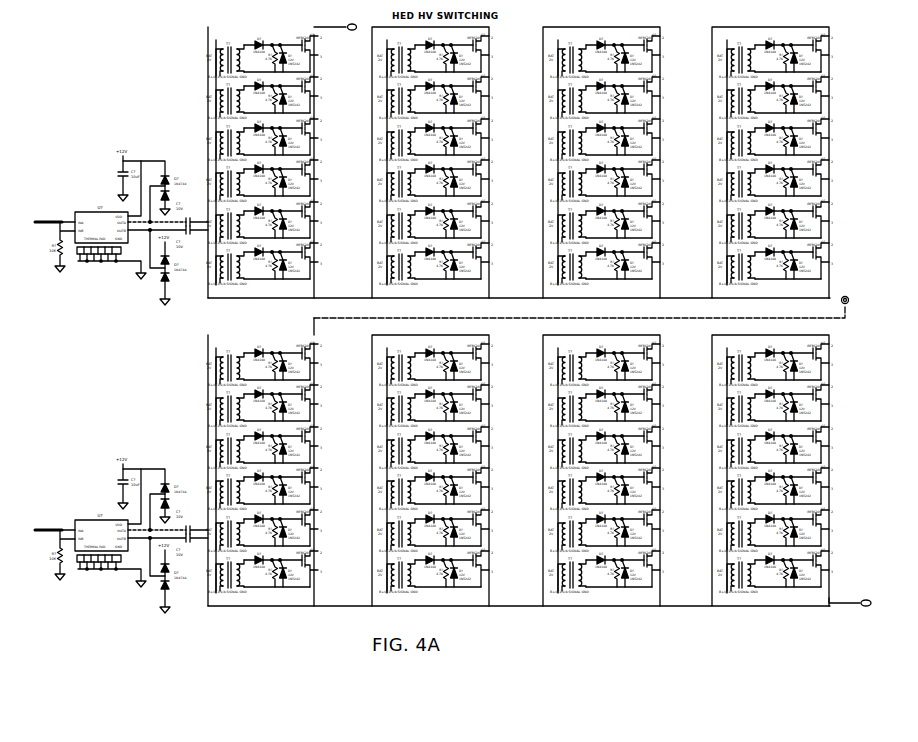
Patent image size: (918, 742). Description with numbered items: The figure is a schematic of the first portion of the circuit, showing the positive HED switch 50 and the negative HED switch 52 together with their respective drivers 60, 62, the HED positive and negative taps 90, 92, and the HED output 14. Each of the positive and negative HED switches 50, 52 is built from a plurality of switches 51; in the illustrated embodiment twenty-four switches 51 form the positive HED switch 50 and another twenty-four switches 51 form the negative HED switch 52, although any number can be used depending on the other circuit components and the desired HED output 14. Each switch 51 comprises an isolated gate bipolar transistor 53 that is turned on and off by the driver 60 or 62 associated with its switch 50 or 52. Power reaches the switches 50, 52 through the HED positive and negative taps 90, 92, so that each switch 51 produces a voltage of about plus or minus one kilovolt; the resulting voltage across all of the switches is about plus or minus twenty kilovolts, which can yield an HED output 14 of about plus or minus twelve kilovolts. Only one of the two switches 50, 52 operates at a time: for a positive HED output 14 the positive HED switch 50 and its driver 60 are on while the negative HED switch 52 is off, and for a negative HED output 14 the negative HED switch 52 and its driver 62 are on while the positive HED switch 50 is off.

The HED output 14 is at (581, 304).
The positive HED switch 50 is at (850, 30).
The switch 51 is at (264, 40).
The negative HED switch 52 is at (850, 338).
The isolated gate bipolar transistor 53 is at (225, 207).
The driver of the positive HED switch 60 is at (96, 175).
The driver of the negative HED switch 62 is at (96, 483).
The HED positive tap 90 is at (334, 18).
The HED negative tap 92 is at (830, 598).